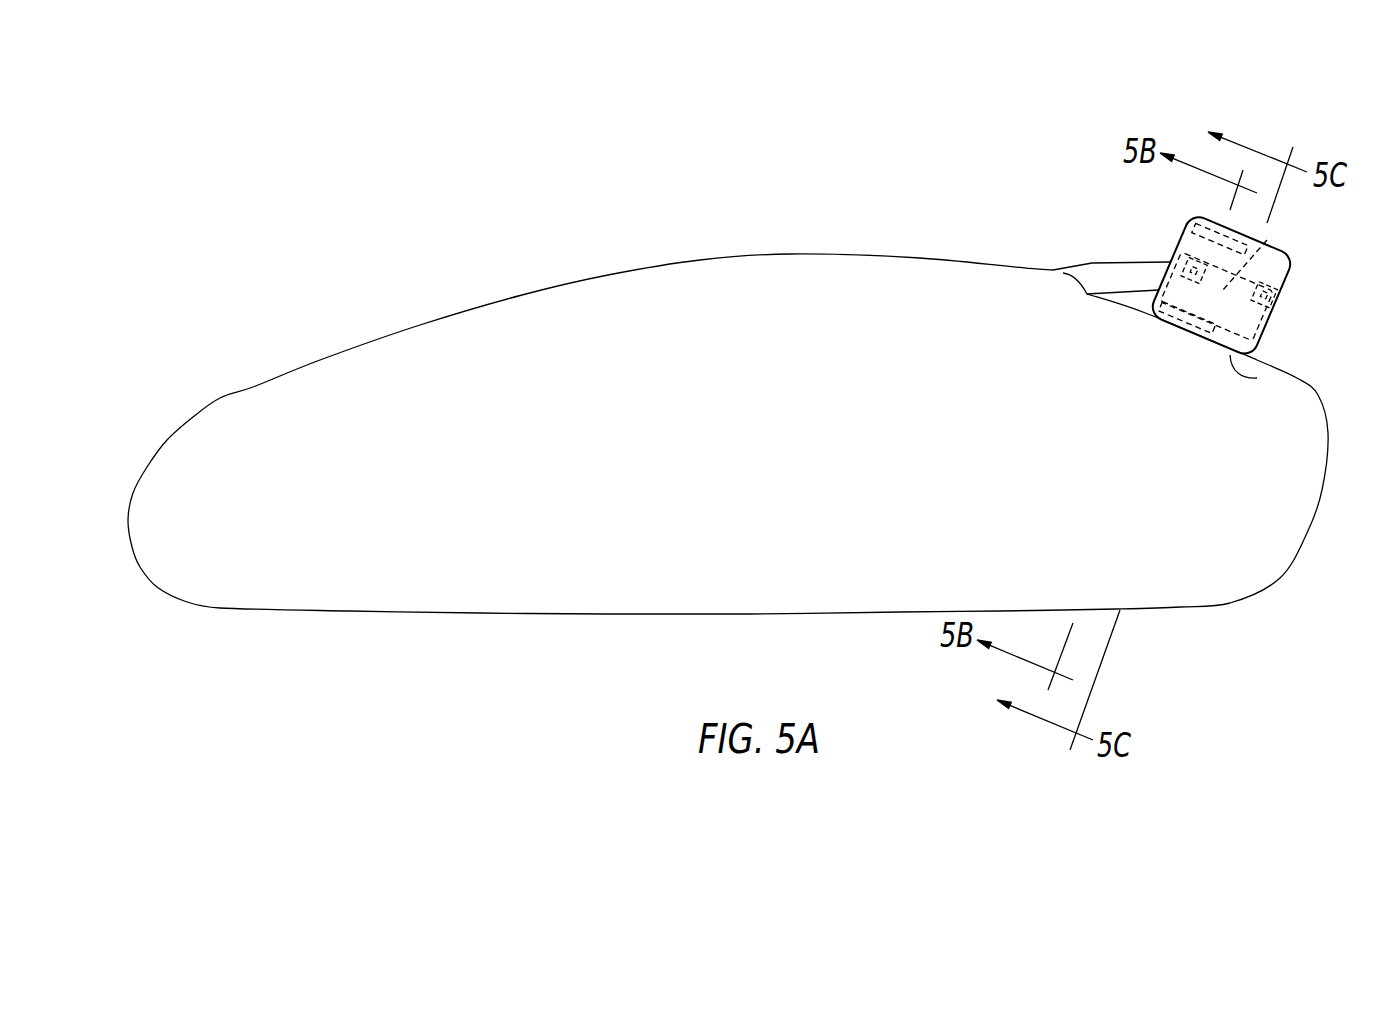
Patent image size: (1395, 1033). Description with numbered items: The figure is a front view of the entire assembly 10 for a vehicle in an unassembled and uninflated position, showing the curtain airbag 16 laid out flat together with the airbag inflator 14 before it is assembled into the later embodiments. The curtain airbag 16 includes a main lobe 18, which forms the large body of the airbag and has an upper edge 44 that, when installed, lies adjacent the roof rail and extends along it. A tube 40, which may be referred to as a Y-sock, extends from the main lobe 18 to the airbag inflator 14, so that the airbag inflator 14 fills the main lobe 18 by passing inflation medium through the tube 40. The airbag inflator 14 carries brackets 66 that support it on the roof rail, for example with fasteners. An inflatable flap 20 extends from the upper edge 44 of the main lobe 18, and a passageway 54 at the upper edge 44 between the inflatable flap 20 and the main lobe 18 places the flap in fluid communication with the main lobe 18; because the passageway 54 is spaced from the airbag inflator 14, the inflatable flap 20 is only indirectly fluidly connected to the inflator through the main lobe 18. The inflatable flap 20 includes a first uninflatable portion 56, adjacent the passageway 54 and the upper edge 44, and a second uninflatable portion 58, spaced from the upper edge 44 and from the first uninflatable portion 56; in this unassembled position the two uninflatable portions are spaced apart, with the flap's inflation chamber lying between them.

The assembly 10 is at (950, 113).
The airbag inflator 14 is at (1267, 240).
The curtain airbag 16 is at (546, 627).
The main lobe 18 is at (1240, 573).
The inflatable flap 20 is at (1289, 270).
The tube 40 is at (1092, 263).
The upper edge 44 is at (806, 254).
The passageway 54 is at (1257, 378).
The first uninflatable portion 56 is at (1193, 233).
The second uninflatable portion 58 is at (1180, 325).
The bracket 66 is at (1182, 258).